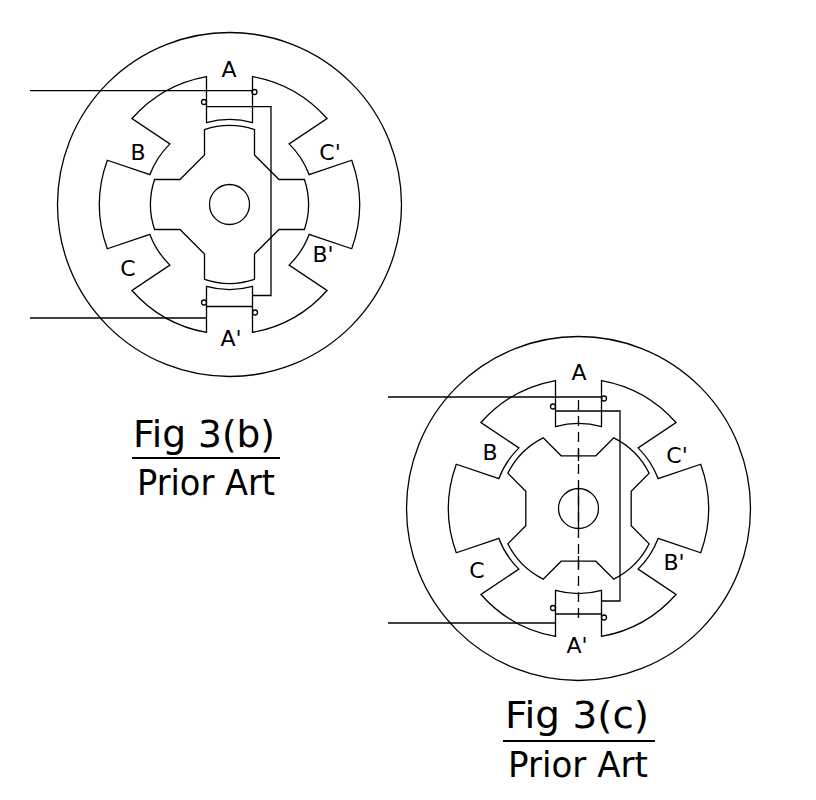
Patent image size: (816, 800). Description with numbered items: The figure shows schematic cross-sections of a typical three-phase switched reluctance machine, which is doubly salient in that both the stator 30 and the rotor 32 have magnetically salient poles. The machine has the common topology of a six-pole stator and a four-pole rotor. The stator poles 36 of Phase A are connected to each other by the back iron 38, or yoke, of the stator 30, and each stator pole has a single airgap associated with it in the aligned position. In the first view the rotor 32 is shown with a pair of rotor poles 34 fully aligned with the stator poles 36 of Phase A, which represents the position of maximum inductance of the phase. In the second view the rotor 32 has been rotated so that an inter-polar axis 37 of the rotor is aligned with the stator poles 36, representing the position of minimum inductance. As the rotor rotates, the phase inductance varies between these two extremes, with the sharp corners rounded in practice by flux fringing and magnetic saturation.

In FIG. 3B, the stator 30 is at (370, 107).
In FIG. 3B, the rotor 32 is at (189, 188).
In FIG. 3B, the rotor poles 34 is at (236, 136).
In FIG. 3B, the stator poles 36 is at (234, 99).
In FIG. 3C, the stator poles 36 is at (591, 402).
In FIG. 3C, the inter-polar axis 37 is at (578, 467).
In FIG. 3B, the back iron 38 is at (377, 193).